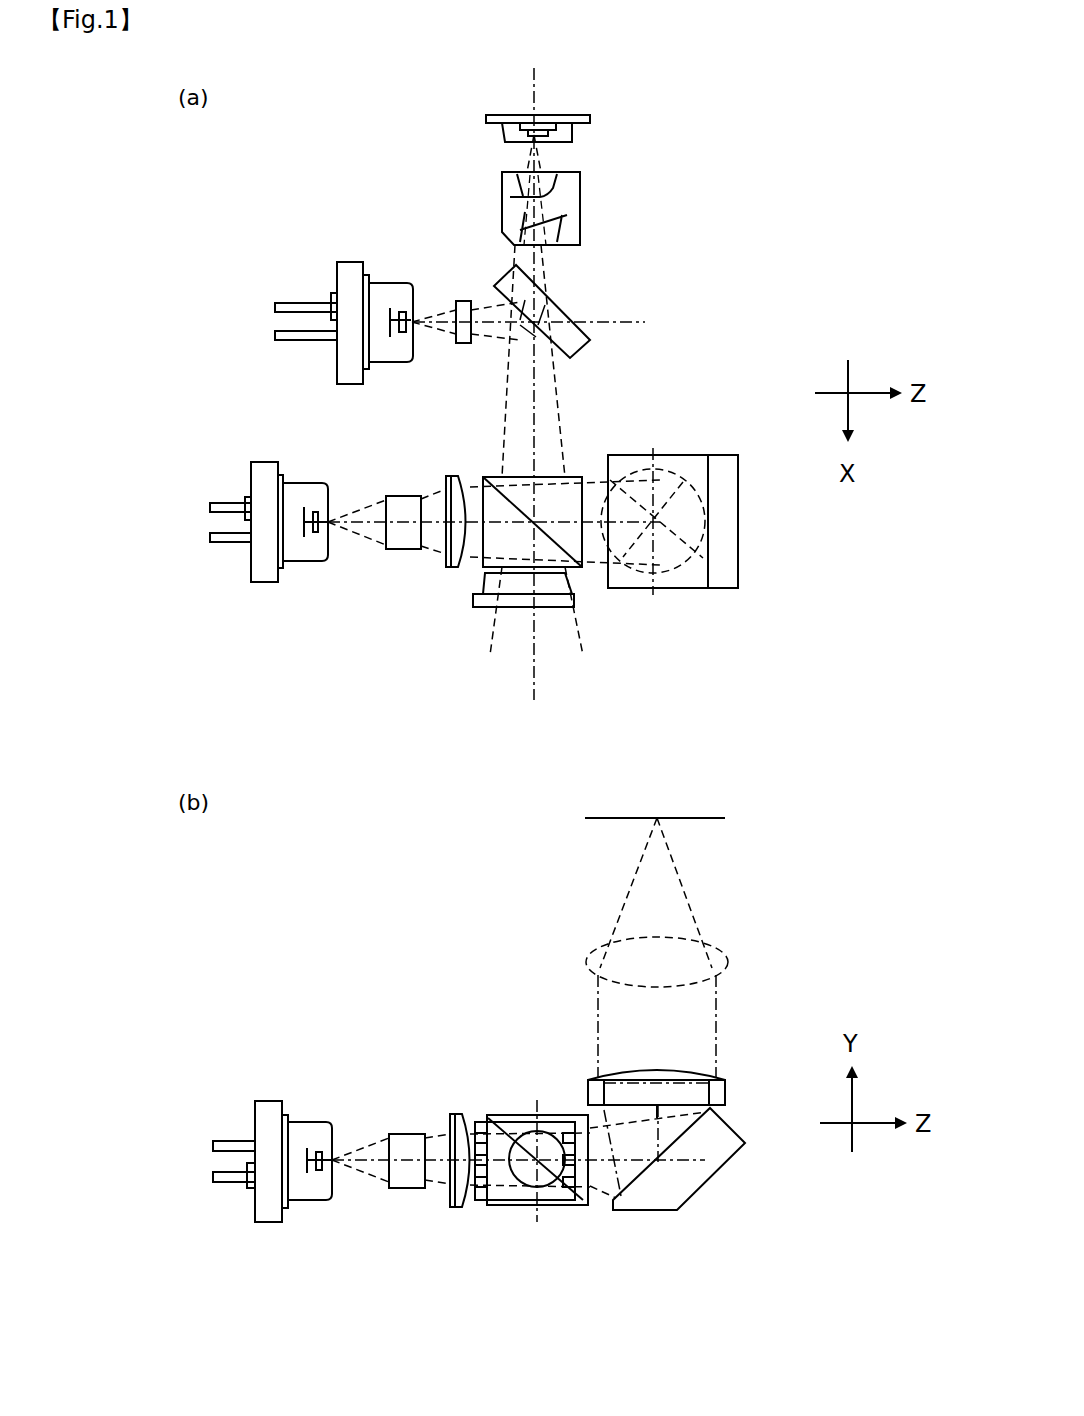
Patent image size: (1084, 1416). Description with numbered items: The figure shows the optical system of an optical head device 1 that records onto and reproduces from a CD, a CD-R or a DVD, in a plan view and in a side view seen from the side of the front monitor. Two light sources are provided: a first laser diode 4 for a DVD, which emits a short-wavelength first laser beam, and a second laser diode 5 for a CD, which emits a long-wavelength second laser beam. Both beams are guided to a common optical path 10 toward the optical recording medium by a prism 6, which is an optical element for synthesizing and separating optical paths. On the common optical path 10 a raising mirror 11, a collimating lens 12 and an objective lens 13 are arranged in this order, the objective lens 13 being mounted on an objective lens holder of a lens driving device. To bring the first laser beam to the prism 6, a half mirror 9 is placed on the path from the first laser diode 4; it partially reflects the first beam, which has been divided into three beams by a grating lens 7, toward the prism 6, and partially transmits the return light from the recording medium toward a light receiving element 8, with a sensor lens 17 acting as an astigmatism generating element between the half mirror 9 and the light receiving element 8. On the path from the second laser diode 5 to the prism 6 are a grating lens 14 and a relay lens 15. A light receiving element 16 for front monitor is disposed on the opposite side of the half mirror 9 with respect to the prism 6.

The optical head device 1 is at (742, 140).
The first laser diode 4 is at (388, 283).
The second laser diode 5 is at (305, 483).
The prism 6 is at (568, 477).
The grating lens 7 is at (462, 343).
The light receiving element 8 is at (590, 119).
The half mirror 9 is at (565, 313).
The common optical path 10 is at (598, 597).
The raising mirror 11 is at (738, 495).
The collimating lens 12 is at (725, 1090).
The objective lens 13 is at (725, 962).
The grating lens 14 is at (405, 549).
The relay lens 15 is at (455, 567).
The light receiving element for front monitor 16 is at (512, 607).
The sensor lens 17 is at (580, 200).